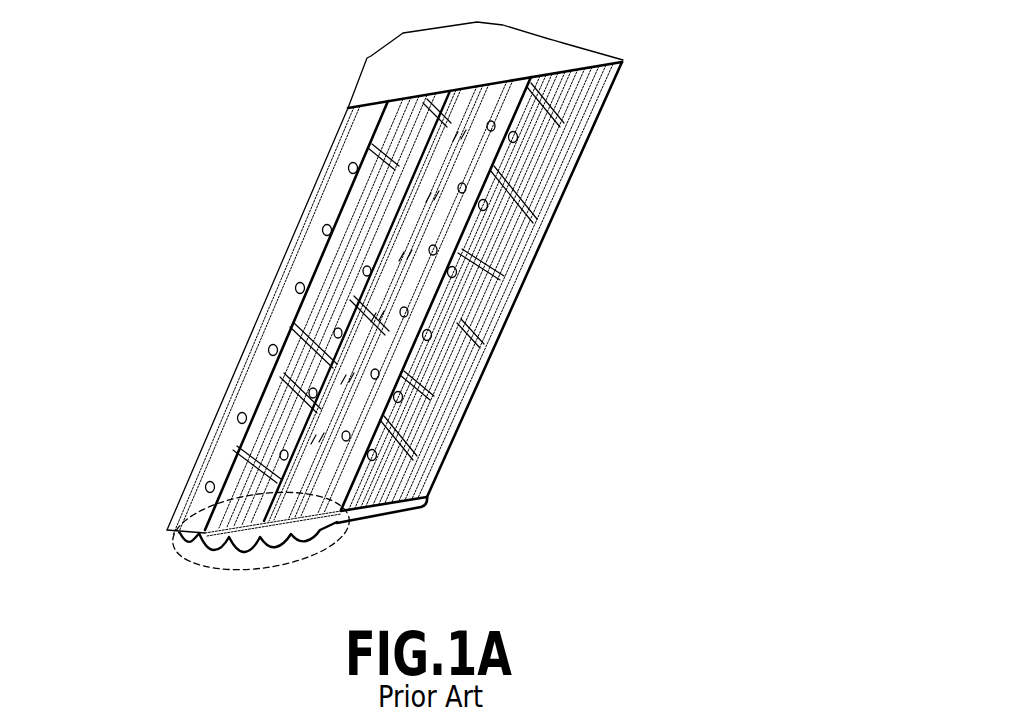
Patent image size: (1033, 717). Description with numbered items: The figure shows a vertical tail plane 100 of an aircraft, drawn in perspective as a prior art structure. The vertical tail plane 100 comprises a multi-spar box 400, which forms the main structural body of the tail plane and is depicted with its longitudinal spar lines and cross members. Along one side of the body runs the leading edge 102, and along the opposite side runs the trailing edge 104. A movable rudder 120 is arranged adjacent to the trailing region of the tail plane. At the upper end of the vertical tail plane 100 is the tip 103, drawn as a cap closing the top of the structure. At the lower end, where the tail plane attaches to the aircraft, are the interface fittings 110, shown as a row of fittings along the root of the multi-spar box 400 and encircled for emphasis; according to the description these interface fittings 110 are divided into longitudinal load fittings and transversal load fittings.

The vertical tail plane 100 is at (208, 113).
The leading edge 102 is at (287, 258).
The tip 103 is at (537, 50).
The trailing edge 104 is at (458, 284).
The interface fittings 110 is at (343, 538).
The movable rudder 120 is at (512, 243).
The multi-spar box 400 is at (300, 382).